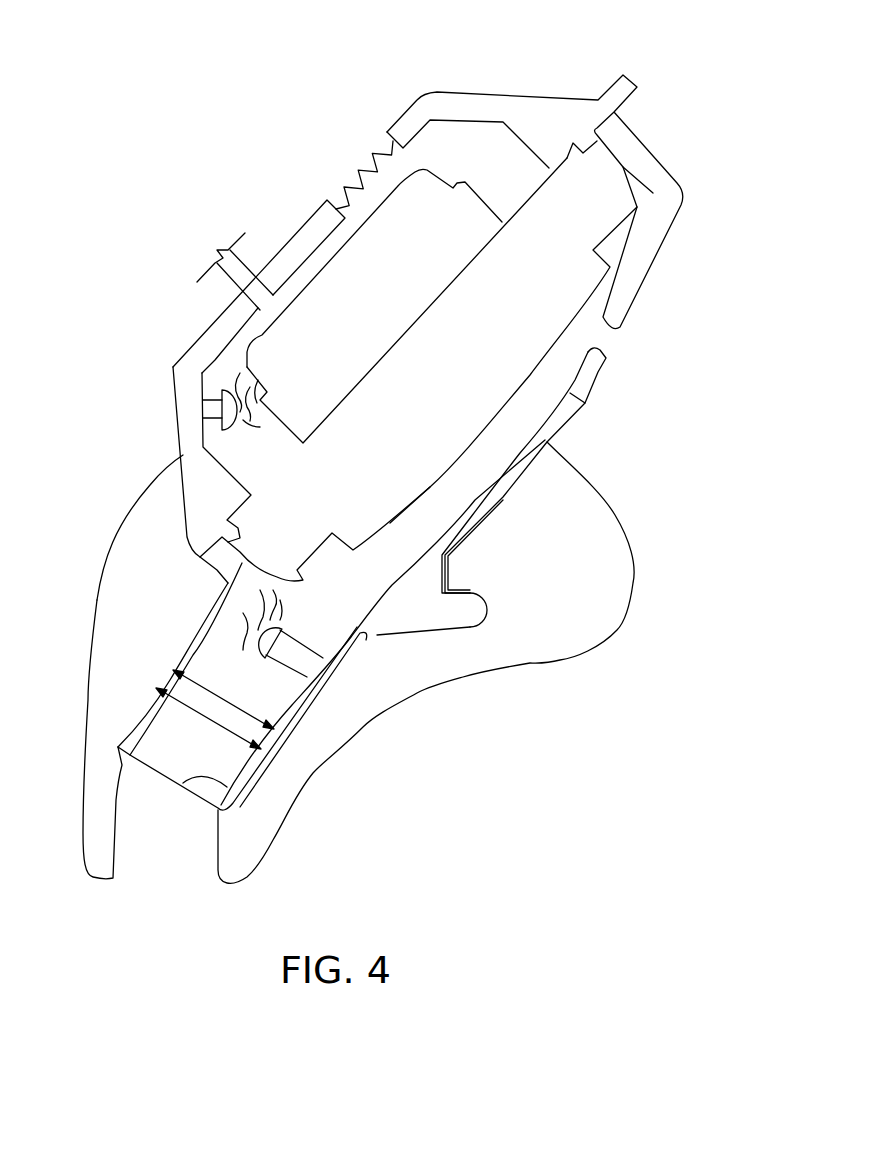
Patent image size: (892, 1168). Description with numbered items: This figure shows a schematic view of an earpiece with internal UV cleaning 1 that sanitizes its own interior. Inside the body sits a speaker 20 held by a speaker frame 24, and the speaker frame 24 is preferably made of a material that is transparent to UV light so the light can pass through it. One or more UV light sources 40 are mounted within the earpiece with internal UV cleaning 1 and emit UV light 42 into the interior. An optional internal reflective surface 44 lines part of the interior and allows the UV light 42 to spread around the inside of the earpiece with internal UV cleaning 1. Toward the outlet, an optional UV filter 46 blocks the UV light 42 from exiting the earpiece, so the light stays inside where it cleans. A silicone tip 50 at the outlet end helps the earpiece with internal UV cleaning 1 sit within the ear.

The earpiece with internal UV cleaning 1 is at (147, 57).
The speaker 20 is at (372, 322).
The speaker frame 24 is at (368, 456).
The UV light source 40 is at (203, 408).
The UV light 42 is at (253, 420).
The internal reflective surface 44 is at (585, 403).
The UV filter 46 is at (233, 807).
The silicone tip 50 is at (333, 713).